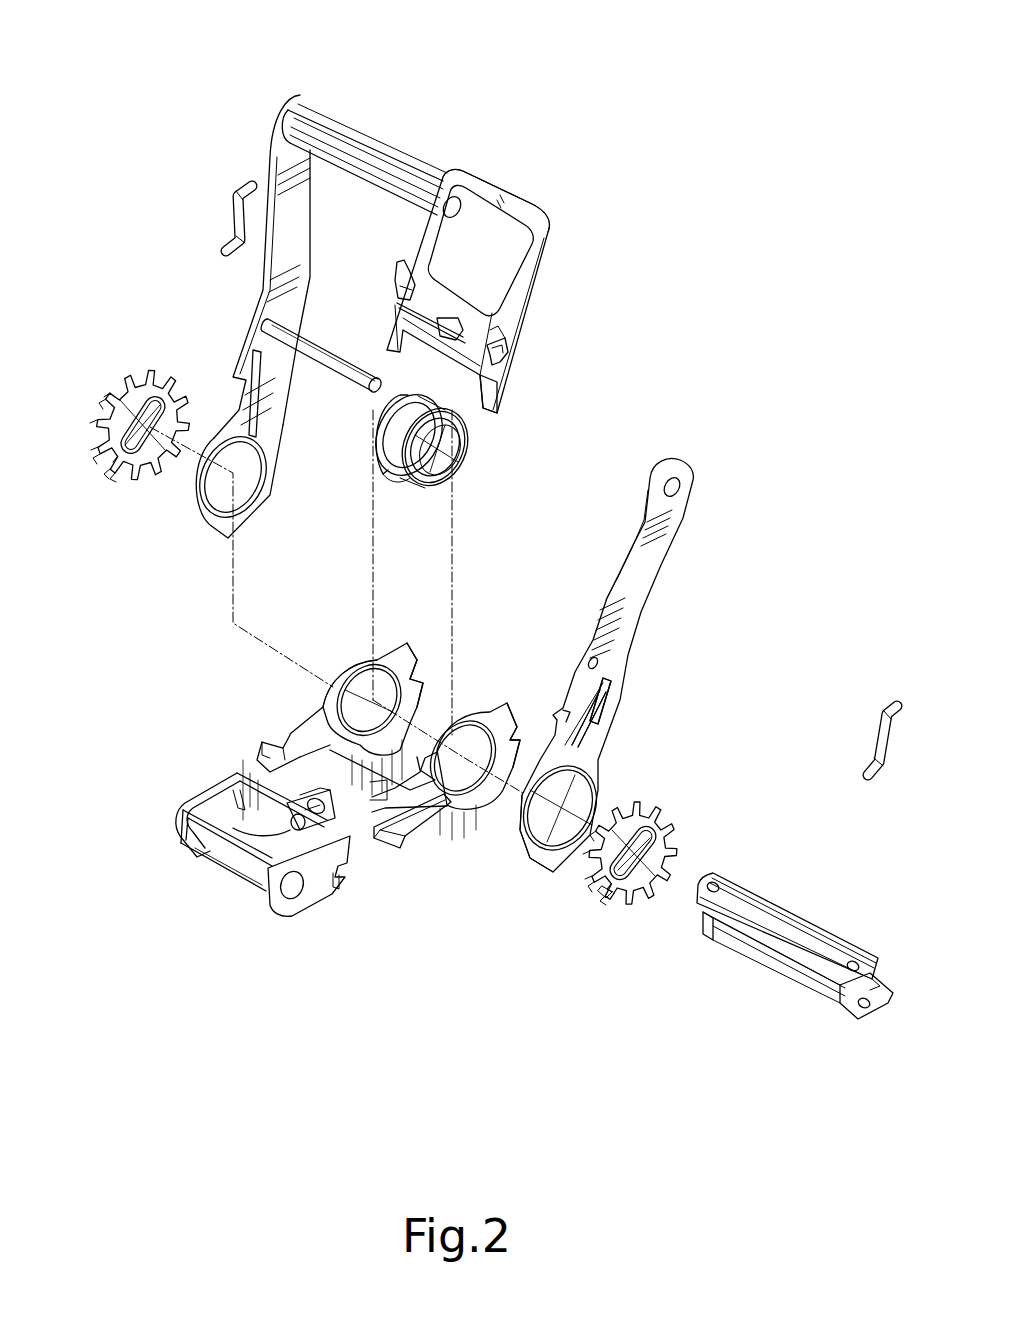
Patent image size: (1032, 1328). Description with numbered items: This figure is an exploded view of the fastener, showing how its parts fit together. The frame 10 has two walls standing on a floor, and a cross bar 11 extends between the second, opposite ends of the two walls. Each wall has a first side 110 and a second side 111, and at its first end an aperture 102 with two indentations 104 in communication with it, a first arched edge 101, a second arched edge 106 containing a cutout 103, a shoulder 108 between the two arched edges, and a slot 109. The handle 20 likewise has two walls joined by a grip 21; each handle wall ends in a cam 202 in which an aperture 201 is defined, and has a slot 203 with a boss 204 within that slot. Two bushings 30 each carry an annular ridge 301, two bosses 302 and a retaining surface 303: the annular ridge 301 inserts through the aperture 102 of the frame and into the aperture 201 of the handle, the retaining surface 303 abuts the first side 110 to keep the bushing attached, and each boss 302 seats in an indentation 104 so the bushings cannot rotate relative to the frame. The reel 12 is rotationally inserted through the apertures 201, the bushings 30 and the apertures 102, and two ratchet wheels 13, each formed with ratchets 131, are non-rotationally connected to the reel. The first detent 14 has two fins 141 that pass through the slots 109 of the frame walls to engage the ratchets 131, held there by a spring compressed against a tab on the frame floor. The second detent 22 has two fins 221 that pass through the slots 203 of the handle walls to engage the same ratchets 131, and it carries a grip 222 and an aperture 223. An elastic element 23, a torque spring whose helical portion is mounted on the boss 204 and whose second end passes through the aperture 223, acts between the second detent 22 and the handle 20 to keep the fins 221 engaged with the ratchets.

The frame 10 is at (150, 812).
The cross bar 11 is at (242, 865).
The reel 12 is at (775, 935).
The ratchet wheels 13 is at (122, 464).
The ratchets 131 is at (608, 902).
The first detent 14 is at (348, 877).
The fins 141 is at (402, 823).
The handle 20 is at (430, 78).
The grip 21 is at (352, 140).
The second detent 22 is at (465, 300).
The fins 221 is at (492, 396).
The grip 222 is at (487, 195).
The aperture 223 is at (462, 335).
The elastic element 23 is at (392, 290).
The bushings 30 is at (452, 497).
The annular ridge 301 is at (460, 442).
The bosses 302 is at (452, 470).
The retaining surface 303 is at (448, 414).
The first arched edge 101 is at (346, 680).
The aperture 102 is at (366, 690).
The cutout 103 is at (415, 678).
The indentations 104 is at (330, 706).
The second arched edge 106 is at (418, 660).
The shoulder 108 is at (405, 650).
The slot 109 is at (268, 762).
The first side 110 is at (420, 752).
The second side 111 is at (467, 812).
The aperture 201 is at (570, 800).
The cam 202 is at (554, 870).
The slot 203 is at (598, 745).
The boss 204 is at (606, 715).